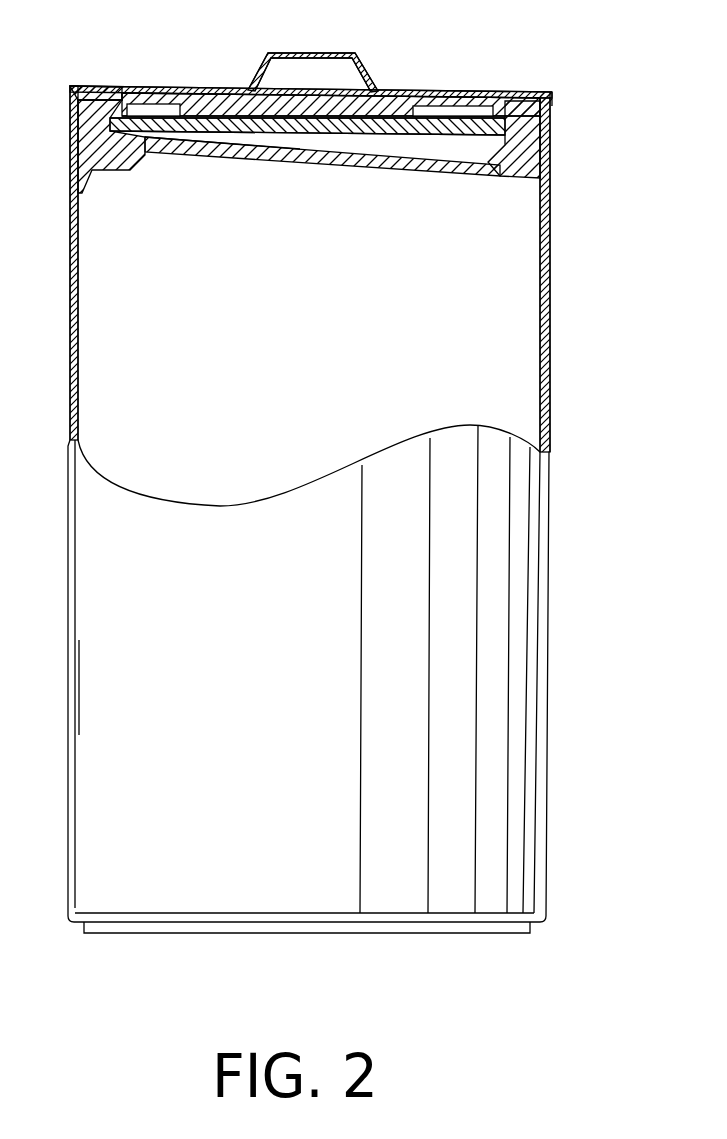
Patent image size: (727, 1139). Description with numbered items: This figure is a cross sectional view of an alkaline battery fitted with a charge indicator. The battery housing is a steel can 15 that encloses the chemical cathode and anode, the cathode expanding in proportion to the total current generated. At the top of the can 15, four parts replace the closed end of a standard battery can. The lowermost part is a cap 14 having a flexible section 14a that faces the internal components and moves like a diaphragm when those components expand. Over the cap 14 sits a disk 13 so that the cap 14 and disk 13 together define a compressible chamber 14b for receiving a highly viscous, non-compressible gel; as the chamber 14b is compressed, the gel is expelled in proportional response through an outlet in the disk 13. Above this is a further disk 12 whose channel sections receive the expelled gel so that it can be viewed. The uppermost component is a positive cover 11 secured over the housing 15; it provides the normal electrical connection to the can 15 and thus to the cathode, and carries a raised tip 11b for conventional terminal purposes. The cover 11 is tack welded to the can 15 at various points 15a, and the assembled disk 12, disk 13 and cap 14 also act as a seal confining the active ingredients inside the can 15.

The positive cover 11 is at (487, 92).
The raised tip 11b is at (322, 18).
The disk 12 is at (338, 105).
The disk 13 is at (222, 120).
The cap 14 is at (518, 158).
The flexible section 14a is at (410, 168).
The compressible chamber 14b is at (300, 148).
The steel can 15 is at (518, 556).
The tack weld points 15a is at (551, 96).